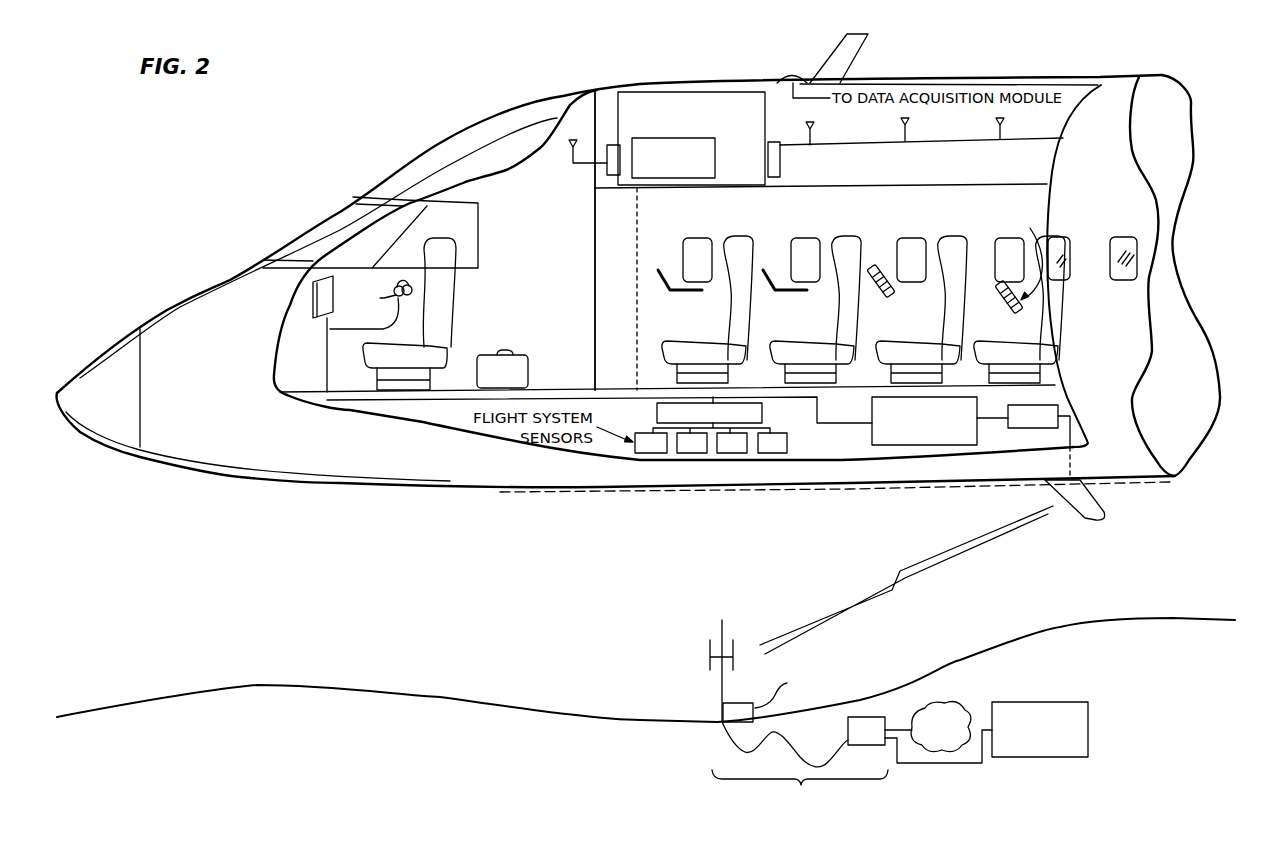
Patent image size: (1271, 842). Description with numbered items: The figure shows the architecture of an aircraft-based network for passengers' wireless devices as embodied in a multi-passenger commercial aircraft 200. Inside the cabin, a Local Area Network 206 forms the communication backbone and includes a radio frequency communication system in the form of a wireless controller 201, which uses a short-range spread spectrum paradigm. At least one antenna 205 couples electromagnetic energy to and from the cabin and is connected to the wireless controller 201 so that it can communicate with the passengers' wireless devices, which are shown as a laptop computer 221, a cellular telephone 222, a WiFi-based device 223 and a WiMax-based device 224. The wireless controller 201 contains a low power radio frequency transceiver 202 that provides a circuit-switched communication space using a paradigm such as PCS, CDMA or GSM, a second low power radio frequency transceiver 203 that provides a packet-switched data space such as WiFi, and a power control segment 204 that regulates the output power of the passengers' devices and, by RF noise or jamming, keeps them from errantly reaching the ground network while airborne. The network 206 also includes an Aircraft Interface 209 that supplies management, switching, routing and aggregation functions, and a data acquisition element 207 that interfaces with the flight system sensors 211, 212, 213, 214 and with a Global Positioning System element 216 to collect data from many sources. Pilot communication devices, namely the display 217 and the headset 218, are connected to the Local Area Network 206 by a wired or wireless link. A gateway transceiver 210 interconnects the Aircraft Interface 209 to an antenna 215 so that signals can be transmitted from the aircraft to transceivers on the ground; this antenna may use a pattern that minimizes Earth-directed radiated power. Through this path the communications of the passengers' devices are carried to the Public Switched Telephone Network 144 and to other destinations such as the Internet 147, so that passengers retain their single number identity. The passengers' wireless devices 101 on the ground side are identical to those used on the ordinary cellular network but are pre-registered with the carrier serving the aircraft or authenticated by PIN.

The multi-passenger commercial aircraft 200 is at (188, 467).
The wireless controller 201 is at (618, 112).
The low power radio frequency transceiver 202 is at (781, 160).
The low power radio frequency transceiver 203 is at (607, 167).
The power control segment 204 is at (635, 178).
The antenna 205 is at (907, 127).
The Local Area Network 206 is at (438, 428).
The data acquisition element 207 is at (762, 413).
The Aircraft Interface 209 is at (947, 445).
The gateway transceiver 210 is at (1025, 428).
The flight system sensor 211 is at (640, 453).
The flight system sensor 212 is at (687, 453).
The flight system sensor 213 is at (730, 453).
The flight system sensor 214 is at (774, 453).
The antenna 215 is at (1103, 507).
The Global Positioning System element 216 is at (783, 73).
The display 217 is at (310, 303).
The headset 218 is at (382, 295).
The laptop computer 221 is at (763, 267).
The cellular telephone 222 is at (870, 266).
The WiFi-based device 223 is at (1018, 317).
The WiMax-based device 224 is at (665, 267).
The passengers' wireless devices 101 is at (851, 715).
The Public Switched Telephone Network 144 is at (957, 700).
The Internet 147 is at (1070, 678).